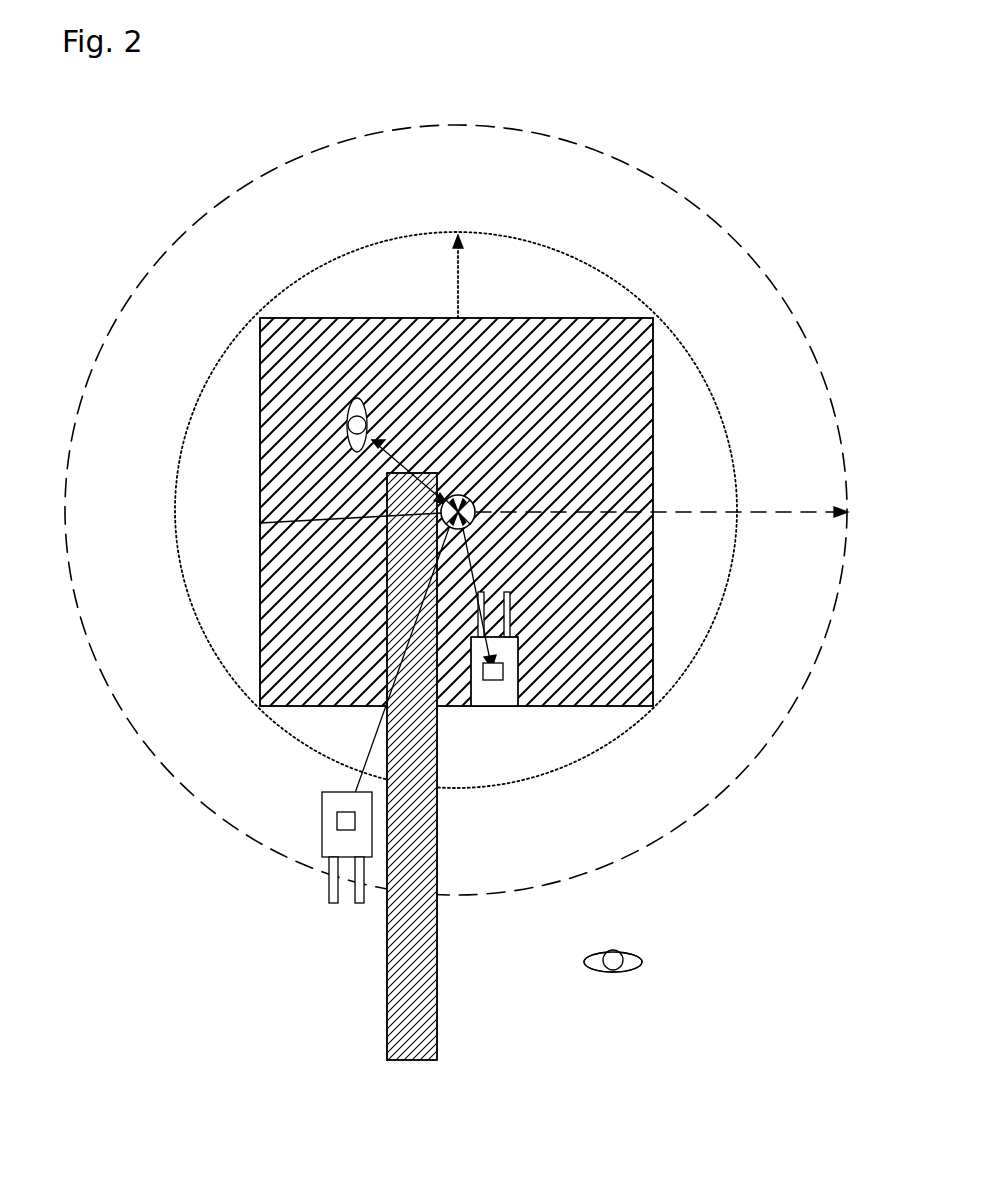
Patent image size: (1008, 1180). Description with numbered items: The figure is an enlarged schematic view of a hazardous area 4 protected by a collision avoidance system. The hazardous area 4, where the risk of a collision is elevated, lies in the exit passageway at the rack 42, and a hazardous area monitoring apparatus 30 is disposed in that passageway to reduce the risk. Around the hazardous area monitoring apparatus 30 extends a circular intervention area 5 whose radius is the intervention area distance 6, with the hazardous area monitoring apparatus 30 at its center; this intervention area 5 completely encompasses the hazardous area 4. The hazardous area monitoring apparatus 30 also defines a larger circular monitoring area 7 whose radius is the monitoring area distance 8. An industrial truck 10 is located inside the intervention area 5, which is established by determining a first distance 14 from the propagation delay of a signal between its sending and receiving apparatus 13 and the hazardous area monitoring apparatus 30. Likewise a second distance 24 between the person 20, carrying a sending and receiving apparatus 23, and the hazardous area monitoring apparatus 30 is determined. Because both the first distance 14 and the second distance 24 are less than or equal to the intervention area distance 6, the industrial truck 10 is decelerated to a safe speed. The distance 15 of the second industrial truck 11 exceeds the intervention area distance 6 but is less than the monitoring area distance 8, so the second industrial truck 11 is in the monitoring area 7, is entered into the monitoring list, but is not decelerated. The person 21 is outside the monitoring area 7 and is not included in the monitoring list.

The hazardous area 4 is at (632, 318).
The intervention area 5 is at (508, 238).
The intervention area distance 6 is at (457, 287).
The monitoring area 7 is at (630, 163).
The monitoring area distance 8 is at (713, 510).
The industrial truck 10 is at (518, 680).
The second industrial truck 11 is at (333, 805).
The sending and receiving apparatus 13 is at (323, 833).
The first distance 14 is at (482, 610).
The distance 15 is at (362, 747).
The person 20 is at (372, 440).
The person 21 is at (628, 968).
The sending and receiving apparatus 23 is at (347, 428).
The second distance 24 is at (260, 523).
The hazardous area monitoring apparatus 30 is at (470, 518).
The rack 42 is at (387, 990).